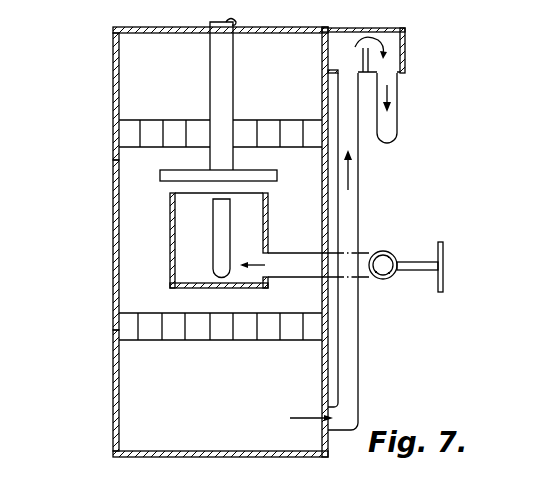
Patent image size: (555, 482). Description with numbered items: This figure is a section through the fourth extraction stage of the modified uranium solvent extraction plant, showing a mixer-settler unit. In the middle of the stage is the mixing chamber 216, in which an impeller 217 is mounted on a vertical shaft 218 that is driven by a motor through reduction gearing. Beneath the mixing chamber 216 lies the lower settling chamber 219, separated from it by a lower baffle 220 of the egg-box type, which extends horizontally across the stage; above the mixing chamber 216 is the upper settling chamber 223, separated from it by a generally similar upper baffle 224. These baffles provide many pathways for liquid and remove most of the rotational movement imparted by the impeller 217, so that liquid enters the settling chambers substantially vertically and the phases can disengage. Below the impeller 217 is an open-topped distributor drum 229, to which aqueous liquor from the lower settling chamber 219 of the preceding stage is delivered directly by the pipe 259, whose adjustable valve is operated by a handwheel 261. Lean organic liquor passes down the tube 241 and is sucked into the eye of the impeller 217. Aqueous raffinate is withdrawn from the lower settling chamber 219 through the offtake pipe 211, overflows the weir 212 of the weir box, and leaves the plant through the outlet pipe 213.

The offtake pipe 211 is at (348, 362).
The weir 212 is at (368, 66).
The outlet pipe 213 is at (397, 110).
The mixing chamber 216 is at (127, 215).
The impeller 217 is at (160, 180).
The vertical shaft 218 is at (233, 60).
The lower settling chamber 219 is at (128, 390).
The lower baffle 220 is at (150, 342).
The upper settling chamber 223 is at (127, 63).
The upper baffle 224 is at (133, 116).
The distributor drum 229 is at (170, 266).
The tube 241 is at (220, 249).
The pipe 259 is at (302, 253).
The handwheel 261 is at (445, 245).